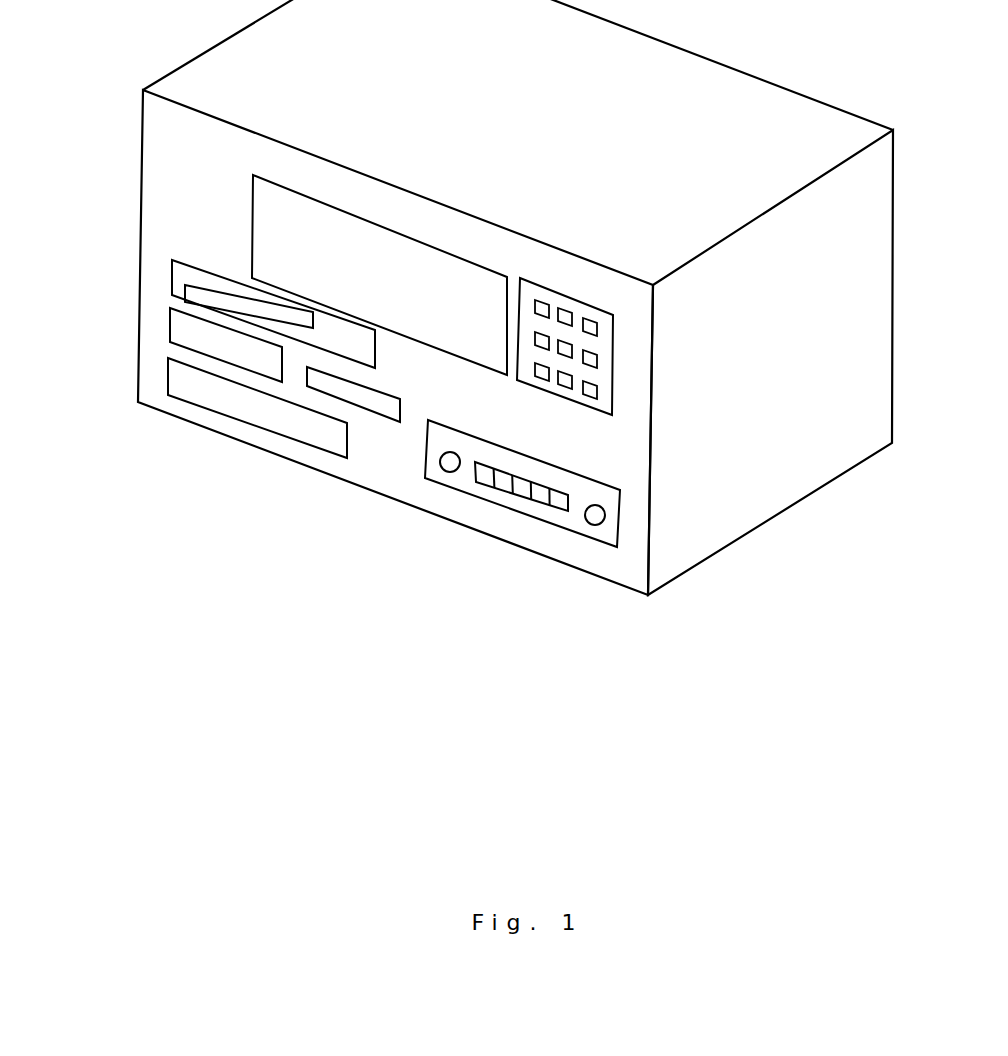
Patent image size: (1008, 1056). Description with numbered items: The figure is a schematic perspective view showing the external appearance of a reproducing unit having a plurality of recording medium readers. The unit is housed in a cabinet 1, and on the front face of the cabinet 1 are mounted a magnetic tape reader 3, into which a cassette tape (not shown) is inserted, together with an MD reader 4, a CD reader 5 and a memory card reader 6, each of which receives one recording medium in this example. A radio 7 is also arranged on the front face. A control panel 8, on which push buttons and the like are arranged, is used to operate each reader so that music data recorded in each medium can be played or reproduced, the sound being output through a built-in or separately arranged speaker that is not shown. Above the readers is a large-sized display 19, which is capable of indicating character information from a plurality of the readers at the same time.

The cabinet 1 is at (848, 471).
The large-sized display 19 is at (252, 203).
The magnetic tape reader 3 is at (172, 287).
The MD reader 4 is at (170, 326).
The CD reader 5 is at (168, 382).
The memory card reader 6 is at (383, 423).
The radio 7 is at (597, 543).
The control panel 8 is at (613, 363).